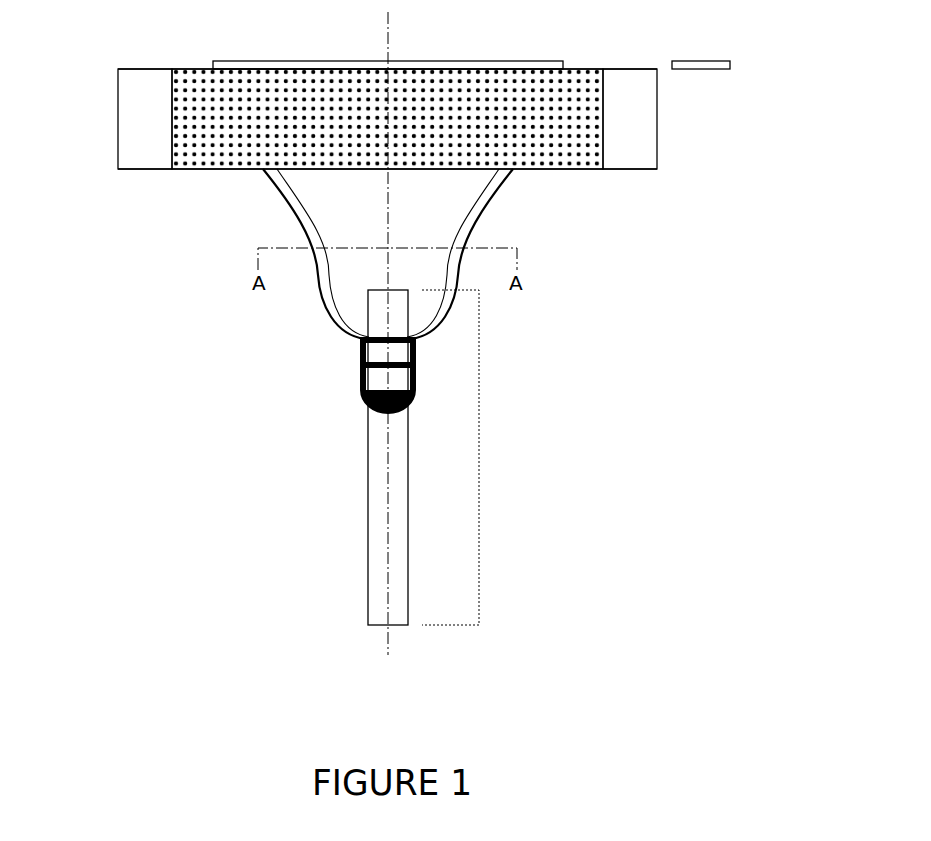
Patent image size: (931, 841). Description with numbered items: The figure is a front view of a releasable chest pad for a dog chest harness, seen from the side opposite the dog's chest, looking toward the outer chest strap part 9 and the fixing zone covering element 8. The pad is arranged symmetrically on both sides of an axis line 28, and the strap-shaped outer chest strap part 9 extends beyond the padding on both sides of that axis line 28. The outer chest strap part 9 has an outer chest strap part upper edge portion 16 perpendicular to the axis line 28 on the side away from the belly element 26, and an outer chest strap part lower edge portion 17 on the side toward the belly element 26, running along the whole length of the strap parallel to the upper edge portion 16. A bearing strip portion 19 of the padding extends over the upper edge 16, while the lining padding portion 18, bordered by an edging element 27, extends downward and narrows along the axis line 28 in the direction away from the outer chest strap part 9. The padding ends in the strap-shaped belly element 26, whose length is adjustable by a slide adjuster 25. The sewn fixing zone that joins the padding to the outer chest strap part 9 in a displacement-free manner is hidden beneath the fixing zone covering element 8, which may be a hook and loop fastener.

The fixing zone covering element 8 is at (562, 150).
The outer chest strap part 9 is at (148, 118).
The outer chest strap part upper edge portion 16 is at (162, 69).
The outer chest strap part lower edge portion 17 is at (162, 169).
The lining padding portion 18 is at (410, 218).
The bearing strip portion 19 is at (730, 66).
The slide adjuster 25 is at (362, 392).
The belly element 26 is at (480, 458).
The edging element 27 is at (328, 277).
The axis line 28 is at (390, 38).